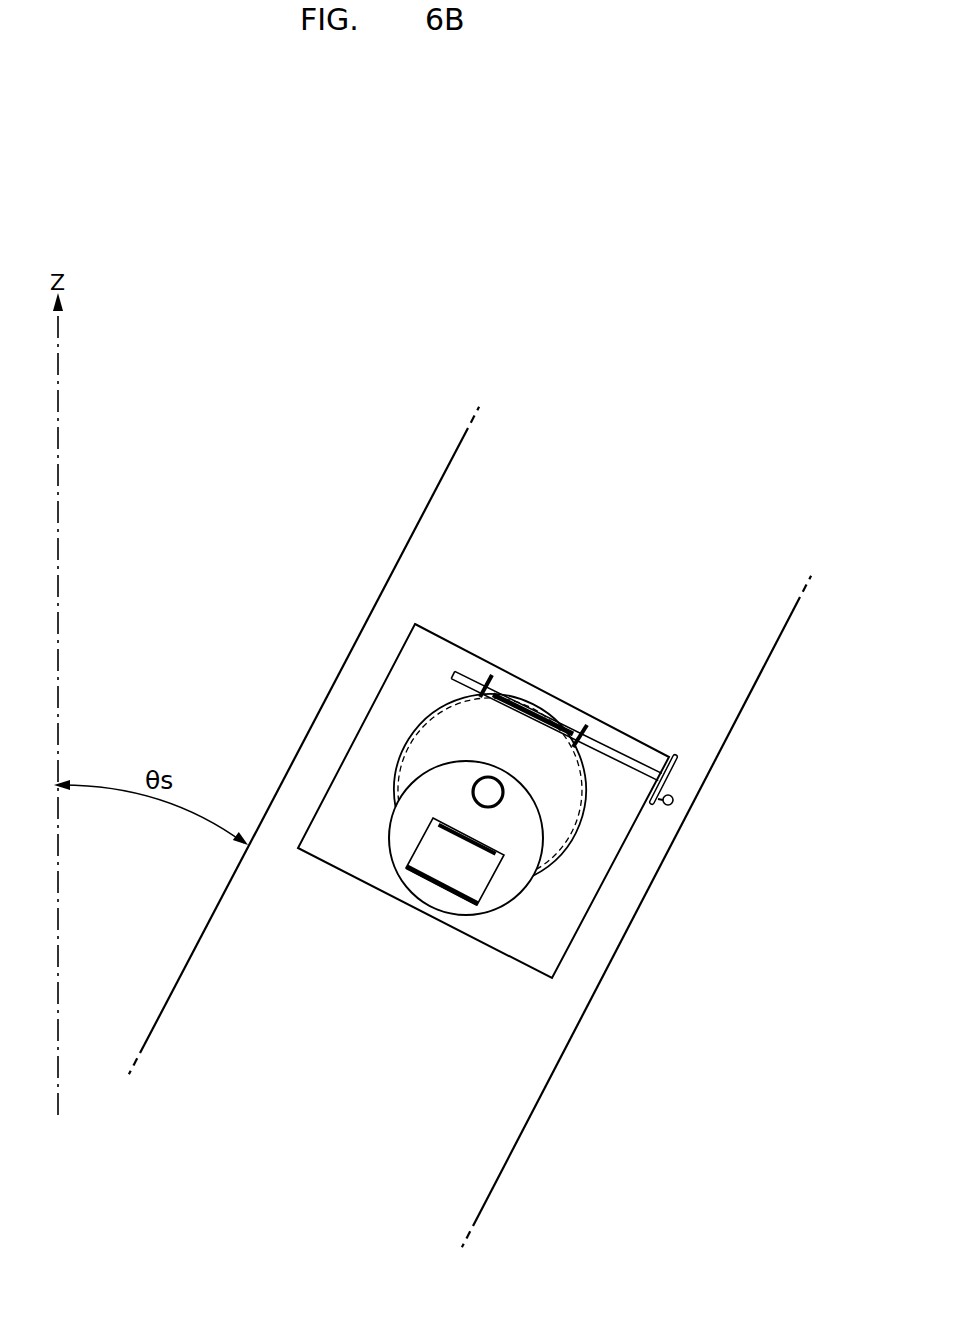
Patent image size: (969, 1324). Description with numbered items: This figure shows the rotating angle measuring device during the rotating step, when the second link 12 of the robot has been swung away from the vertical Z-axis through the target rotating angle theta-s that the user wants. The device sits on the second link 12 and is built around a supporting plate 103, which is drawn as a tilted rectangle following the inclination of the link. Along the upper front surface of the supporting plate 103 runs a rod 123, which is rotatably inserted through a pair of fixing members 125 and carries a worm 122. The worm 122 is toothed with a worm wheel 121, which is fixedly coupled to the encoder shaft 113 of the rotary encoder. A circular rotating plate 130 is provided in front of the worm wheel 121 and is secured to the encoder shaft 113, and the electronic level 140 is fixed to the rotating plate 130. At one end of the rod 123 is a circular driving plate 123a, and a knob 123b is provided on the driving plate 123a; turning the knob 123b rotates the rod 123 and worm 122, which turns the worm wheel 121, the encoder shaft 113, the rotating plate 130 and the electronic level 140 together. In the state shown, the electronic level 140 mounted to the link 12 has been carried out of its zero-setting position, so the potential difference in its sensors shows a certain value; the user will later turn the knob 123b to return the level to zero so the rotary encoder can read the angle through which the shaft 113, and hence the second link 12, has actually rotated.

The second link 12 is at (762, 645).
The supporting plate 103 is at (510, 930).
The worm wheel 121 is at (565, 782).
The rotating plate 130 is at (522, 842).
The encoder shaft 113 is at (492, 795).
The electronic level 140 is at (480, 877).
The worm 122 is at (523, 697).
The fixing members 125 is at (490, 667).
The rod 123 is at (627, 748).
The circular driving plate 123a is at (677, 772).
The knob 123b is at (674, 802).